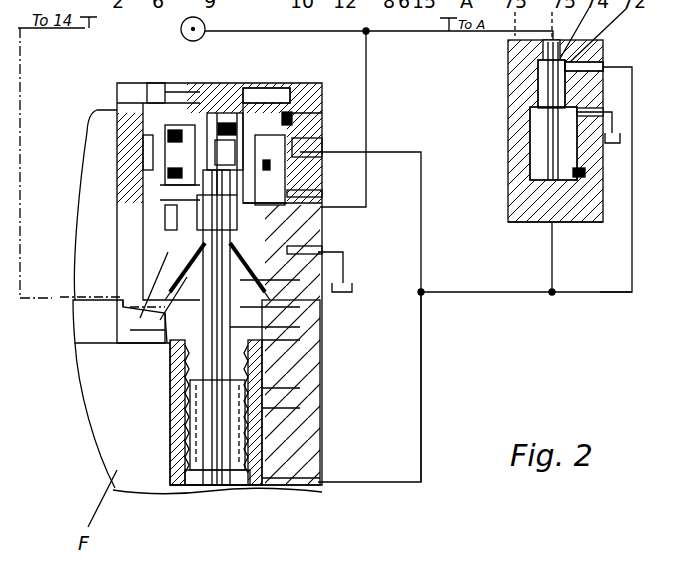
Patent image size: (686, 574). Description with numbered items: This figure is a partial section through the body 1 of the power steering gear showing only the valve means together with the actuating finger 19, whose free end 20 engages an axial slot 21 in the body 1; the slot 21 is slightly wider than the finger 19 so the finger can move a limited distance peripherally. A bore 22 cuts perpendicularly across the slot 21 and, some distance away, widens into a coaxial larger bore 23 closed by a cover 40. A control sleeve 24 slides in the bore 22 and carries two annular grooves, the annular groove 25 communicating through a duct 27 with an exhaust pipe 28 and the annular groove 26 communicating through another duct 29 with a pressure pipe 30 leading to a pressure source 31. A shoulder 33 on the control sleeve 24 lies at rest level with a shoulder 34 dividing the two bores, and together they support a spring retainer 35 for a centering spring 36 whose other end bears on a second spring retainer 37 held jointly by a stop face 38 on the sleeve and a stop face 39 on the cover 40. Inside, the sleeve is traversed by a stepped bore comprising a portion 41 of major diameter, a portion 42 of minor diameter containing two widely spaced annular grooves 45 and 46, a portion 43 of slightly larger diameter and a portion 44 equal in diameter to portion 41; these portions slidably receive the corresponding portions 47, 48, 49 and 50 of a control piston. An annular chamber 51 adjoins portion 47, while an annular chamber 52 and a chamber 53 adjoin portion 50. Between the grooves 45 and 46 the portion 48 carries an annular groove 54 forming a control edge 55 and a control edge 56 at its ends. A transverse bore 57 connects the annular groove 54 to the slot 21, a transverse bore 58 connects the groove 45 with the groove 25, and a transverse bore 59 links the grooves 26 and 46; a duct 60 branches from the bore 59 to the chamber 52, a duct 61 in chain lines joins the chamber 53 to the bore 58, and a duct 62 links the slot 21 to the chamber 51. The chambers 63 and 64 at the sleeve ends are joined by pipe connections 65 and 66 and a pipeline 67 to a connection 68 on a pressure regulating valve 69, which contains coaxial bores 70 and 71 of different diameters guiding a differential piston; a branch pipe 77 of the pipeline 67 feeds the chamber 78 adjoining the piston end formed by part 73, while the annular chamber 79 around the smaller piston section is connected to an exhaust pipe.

The body 1 is at (308, 442).
The actuating finger 19 is at (100, 340).
The free end 20 is at (175, 350).
The axial slot 21 is at (170, 388).
The bore 22 is at (170, 388).
The larger bore 23 is at (297, 115).
The control sleeve 24 is at (300, 327).
The annular groove 25 is at (168, 252).
The annular groove 26 is at (175, 227).
The duct 27 is at (318, 262).
The exhaust pipe 28 is at (343, 265).
The duct 29 is at (300, 214).
The pressure pipe 30 is at (367, 103).
The pressure source 31 is at (181, 29).
The shoulder 33 is at (170, 187).
The shoulder 34 is at (178, 172).
The spring retainer 35 is at (187, 173).
The centering spring 36 is at (182, 168).
The spring retainer 37 is at (180, 135).
The stop face 38 is at (152, 100).
The stop face 39 is at (170, 130).
The cover 40 is at (220, 90).
The portion of major diameter 41 is at (283, 430).
The portion of minor diameter 42 is at (300, 370).
The portion of slightly larger diameter 43 is at (173, 215).
The portion 44 is at (295, 118).
The annular groove 45 is at (170, 330).
The annular groove 46 is at (173, 247).
The control piston portion 47 is at (245, 420).
The control piston portion 48 is at (300, 408).
The control piston portion 49 is at (300, 147).
The control piston portion 50 is at (237, 160).
The annular chamber 51 is at (170, 447).
The annular chamber 52 is at (322, 178).
The chamber 53 is at (192, 147).
The annular groove 54 is at (300, 280).
The control edge 55 is at (216, 327).
The control edge 56 is at (217, 212).
The transverse bore 57 is at (187, 277).
The transverse bore 58 is at (300, 307).
The transverse bore 59 is at (300, 222).
The duct 60 is at (320, 195).
The duct 61 is at (288, 167).
The duct 62 is at (300, 388).
The chamber 63 is at (192, 477).
The chamber 64 is at (177, 115).
The pipe connection 65 is at (423, 422).
The pipe connection 66 is at (423, 207).
The pipeline 67 is at (608, 290).
The connection 68 is at (603, 65).
The pressure regulating valve 69 is at (500, 99).
The bore 70 is at (538, 65).
The bore 71 is at (530, 160).
The differential piston cross section 73 is at (585, 173).
The branch pipe 77 is at (552, 262).
The chamber 78 is at (507, 220).
The annular chamber 79 is at (600, 113).